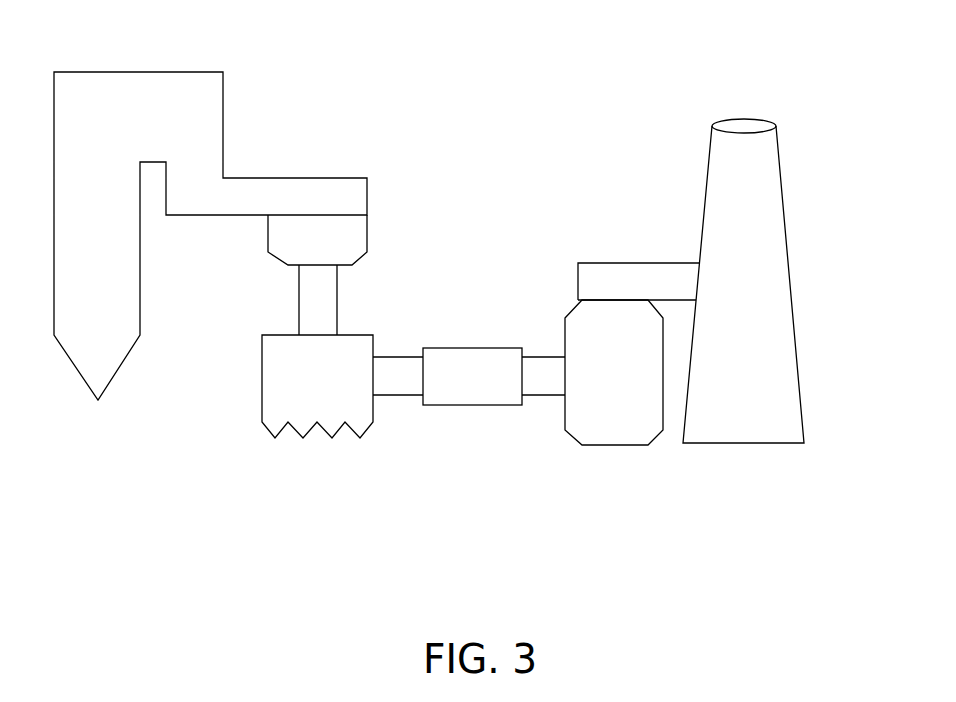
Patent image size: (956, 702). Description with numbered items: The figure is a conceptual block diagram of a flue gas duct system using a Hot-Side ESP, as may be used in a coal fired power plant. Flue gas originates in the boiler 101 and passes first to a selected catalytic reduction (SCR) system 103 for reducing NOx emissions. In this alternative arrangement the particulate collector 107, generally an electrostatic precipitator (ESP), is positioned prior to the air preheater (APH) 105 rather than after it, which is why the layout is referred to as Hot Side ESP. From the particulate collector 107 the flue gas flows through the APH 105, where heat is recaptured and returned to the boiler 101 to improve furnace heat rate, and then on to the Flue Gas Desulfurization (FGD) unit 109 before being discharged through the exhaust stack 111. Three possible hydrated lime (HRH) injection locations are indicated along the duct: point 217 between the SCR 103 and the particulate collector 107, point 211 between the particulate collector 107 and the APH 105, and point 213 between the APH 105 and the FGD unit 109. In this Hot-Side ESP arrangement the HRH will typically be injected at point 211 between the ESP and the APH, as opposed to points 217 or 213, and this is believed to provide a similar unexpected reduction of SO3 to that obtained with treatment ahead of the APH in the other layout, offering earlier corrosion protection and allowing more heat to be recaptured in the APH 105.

The boiler 101 is at (165, 72).
The selected catalytic reduction (SCR) system 103 is at (368, 229).
The air preheater (APH) 105 is at (490, 348).
The particulate collector 107 is at (262, 385).
The Flue Gas Desulfurization (FGD) unit 109 is at (615, 446).
The exhaust stack 111 is at (701, 158).
The injection point 211 is at (406, 402).
The injection point 213 is at (545, 403).
The injection point 217 is at (290, 292).